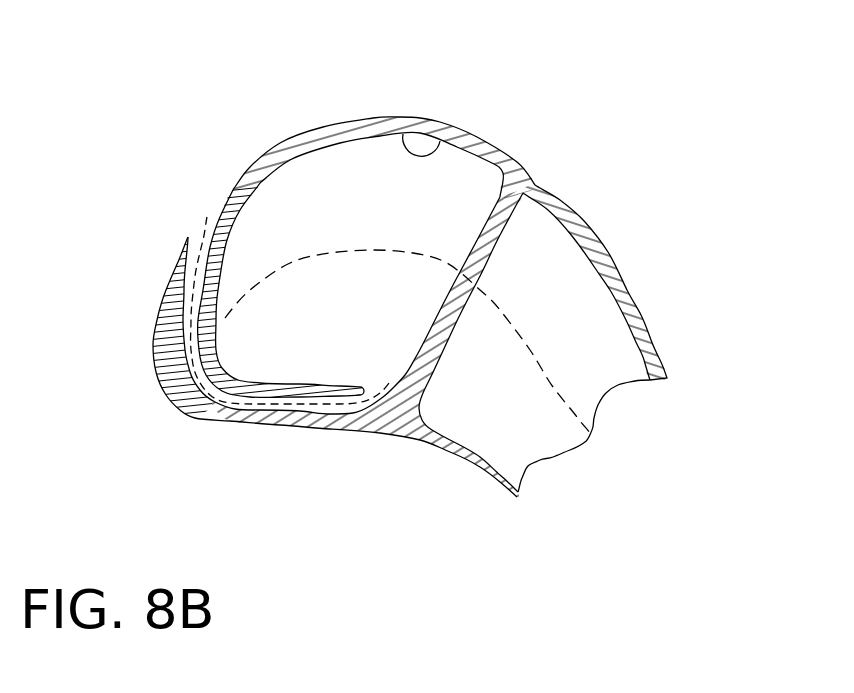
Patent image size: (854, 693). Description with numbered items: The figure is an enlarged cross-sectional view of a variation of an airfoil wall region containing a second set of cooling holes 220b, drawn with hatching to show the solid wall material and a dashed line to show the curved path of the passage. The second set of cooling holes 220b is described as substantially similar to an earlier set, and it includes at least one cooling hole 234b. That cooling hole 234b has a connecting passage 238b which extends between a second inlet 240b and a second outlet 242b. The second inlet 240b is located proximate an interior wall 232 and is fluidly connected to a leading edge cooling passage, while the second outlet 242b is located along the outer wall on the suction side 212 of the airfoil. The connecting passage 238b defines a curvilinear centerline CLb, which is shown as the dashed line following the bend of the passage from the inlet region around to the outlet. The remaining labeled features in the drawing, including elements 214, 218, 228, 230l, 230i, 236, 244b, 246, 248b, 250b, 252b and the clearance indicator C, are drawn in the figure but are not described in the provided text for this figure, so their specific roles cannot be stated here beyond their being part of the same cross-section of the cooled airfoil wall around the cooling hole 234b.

The suction side 212 is at (633, 313).
The wall 214 is at (170, 404).
The flange 218 is at (503, 477).
The second set of cooling holes 220b is at (185, 288).
The rib 228 is at (501, 153).
The outer region 230l is at (395, 281).
The inner region 230i is at (620, 368).
The interior wall 232 is at (478, 275).
The cooling hole 234b is at (200, 232).
The hook assembly 236 is at (121, 75).
The connecting passage 238b is at (213, 407).
The second inlet 240b is at (367, 375).
The second outlet 242b is at (223, 182).
The arm inner surface 244b is at (230, 358).
The notch 246 is at (409, 211).
The wall thickness 248b is at (305, 405).
The bulge surface 250b is at (157, 342).
The bend 252b is at (198, 264).
The clearance C is at (398, 372).
The curvilinear centerline CLb is at (261, 405).